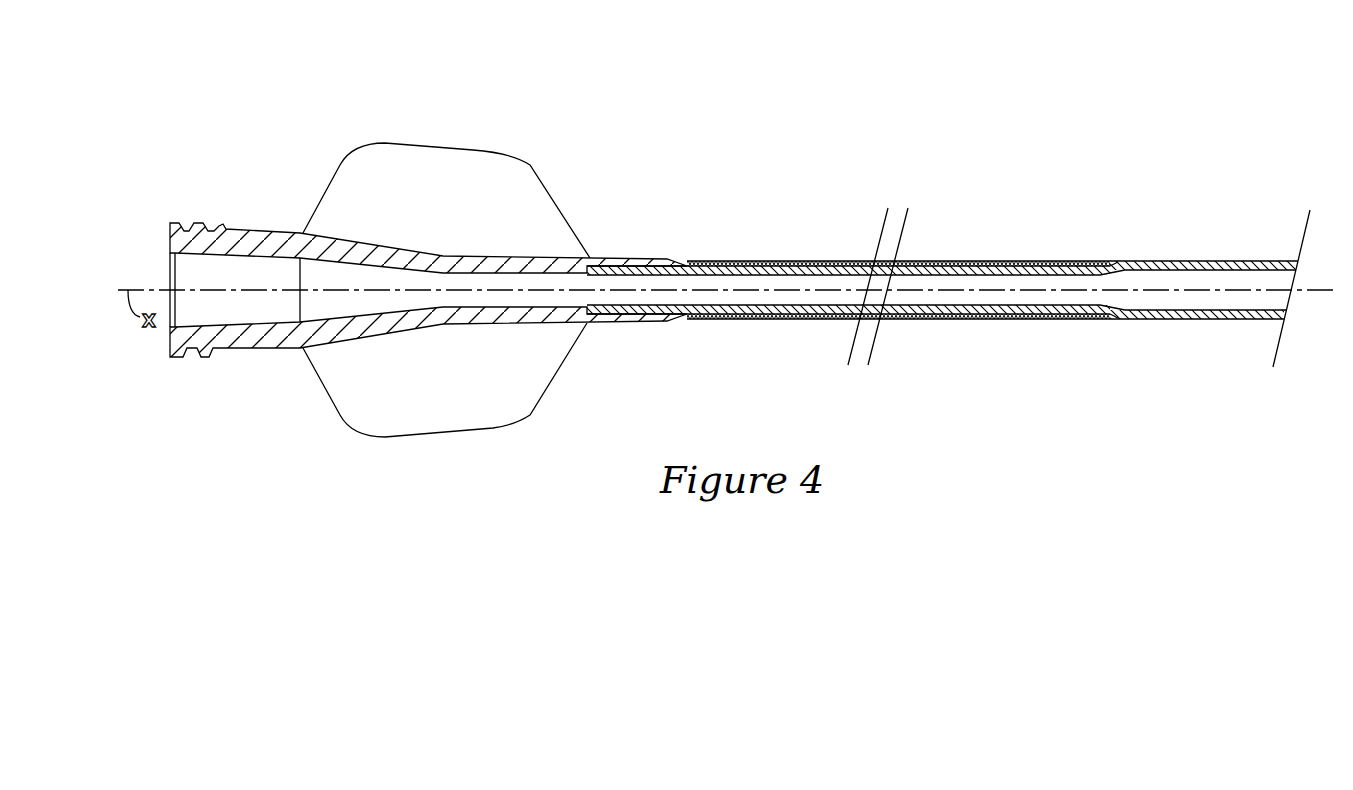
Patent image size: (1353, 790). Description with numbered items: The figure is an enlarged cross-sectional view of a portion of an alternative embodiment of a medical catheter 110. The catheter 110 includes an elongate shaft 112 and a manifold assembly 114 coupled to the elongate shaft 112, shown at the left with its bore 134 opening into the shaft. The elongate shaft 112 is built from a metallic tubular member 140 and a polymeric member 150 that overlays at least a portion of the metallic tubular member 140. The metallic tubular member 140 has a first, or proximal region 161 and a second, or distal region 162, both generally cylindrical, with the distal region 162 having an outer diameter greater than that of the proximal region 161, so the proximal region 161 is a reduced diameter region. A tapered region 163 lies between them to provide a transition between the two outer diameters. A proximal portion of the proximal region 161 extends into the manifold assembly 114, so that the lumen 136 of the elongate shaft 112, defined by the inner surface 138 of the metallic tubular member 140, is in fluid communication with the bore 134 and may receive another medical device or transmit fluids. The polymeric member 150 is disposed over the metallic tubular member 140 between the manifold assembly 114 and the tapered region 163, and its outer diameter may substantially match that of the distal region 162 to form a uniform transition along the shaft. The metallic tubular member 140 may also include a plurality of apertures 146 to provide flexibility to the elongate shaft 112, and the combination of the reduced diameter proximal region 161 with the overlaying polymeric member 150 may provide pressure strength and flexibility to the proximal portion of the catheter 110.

The catheter 110 is at (1095, 110).
The elongate shaft 112 is at (1053, 362).
The manifold assembly 114 is at (582, 160).
The bore 134 is at (257, 265).
The lumen 136 is at (750, 277).
The inner surface 138 is at (800, 278).
The metallic tubular member 140 is at (1185, 325).
The apertures 146 is at (1223, 325).
The polymeric member 150 is at (957, 322).
The proximal region 161 is at (983, 245).
The distal region 162 is at (1228, 245).
The tapered region 163 is at (1097, 245).